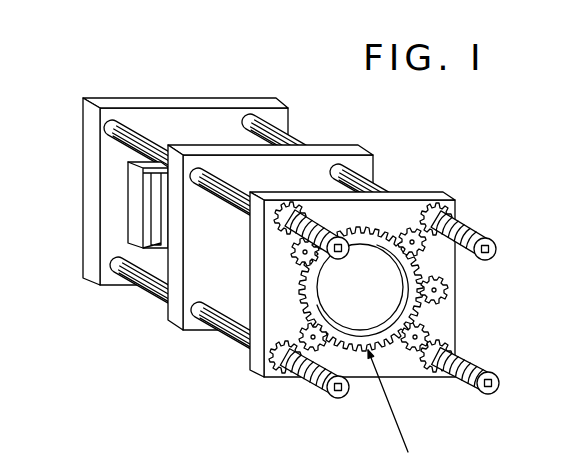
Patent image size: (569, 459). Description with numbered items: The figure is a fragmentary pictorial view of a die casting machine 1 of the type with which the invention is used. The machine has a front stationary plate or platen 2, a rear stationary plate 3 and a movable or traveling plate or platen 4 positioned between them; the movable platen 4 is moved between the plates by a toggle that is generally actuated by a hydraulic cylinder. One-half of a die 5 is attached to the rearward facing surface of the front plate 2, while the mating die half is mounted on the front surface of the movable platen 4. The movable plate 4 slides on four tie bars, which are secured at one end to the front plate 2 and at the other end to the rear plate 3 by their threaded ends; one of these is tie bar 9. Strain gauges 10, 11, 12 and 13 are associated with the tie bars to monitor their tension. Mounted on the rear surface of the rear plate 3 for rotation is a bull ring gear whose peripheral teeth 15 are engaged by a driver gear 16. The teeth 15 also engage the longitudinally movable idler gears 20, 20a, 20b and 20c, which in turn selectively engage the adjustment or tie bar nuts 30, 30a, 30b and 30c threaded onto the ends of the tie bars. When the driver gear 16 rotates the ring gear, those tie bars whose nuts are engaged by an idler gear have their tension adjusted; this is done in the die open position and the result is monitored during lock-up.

The die casting machine 1 is at (150, 302).
The front stationary plate or platen 2 is at (200, 107).
The rear stationary plate 3 is at (253, 373).
The movable or traveling plate or platen 4 is at (335, 145).
The die half 5 is at (133, 215).
The tie bar 9 is at (482, 358).
The strain gauge 10 is at (496, 258).
The strain gauge 11 is at (347, 250).
The strain gauge 12 is at (345, 398).
The strain gauge 13 is at (486, 394).
The peripheral teeth 15 is at (375, 235).
The driver gear 16 is at (452, 302).
The idler gear 20 is at (416, 236).
The idler gear 20a is at (354, 290).
The idler gear 20b is at (291, 262).
The idler gear 20c is at (397, 230).
The adjustment nut or tie bar nut 30 is at (422, 377).
The adjustment nut or tie bar nut 30a is at (283, 377).
The adjustment nut or tie bar nut 30b is at (278, 236).
The adjustment nut or tie bar nut 30c is at (453, 212).